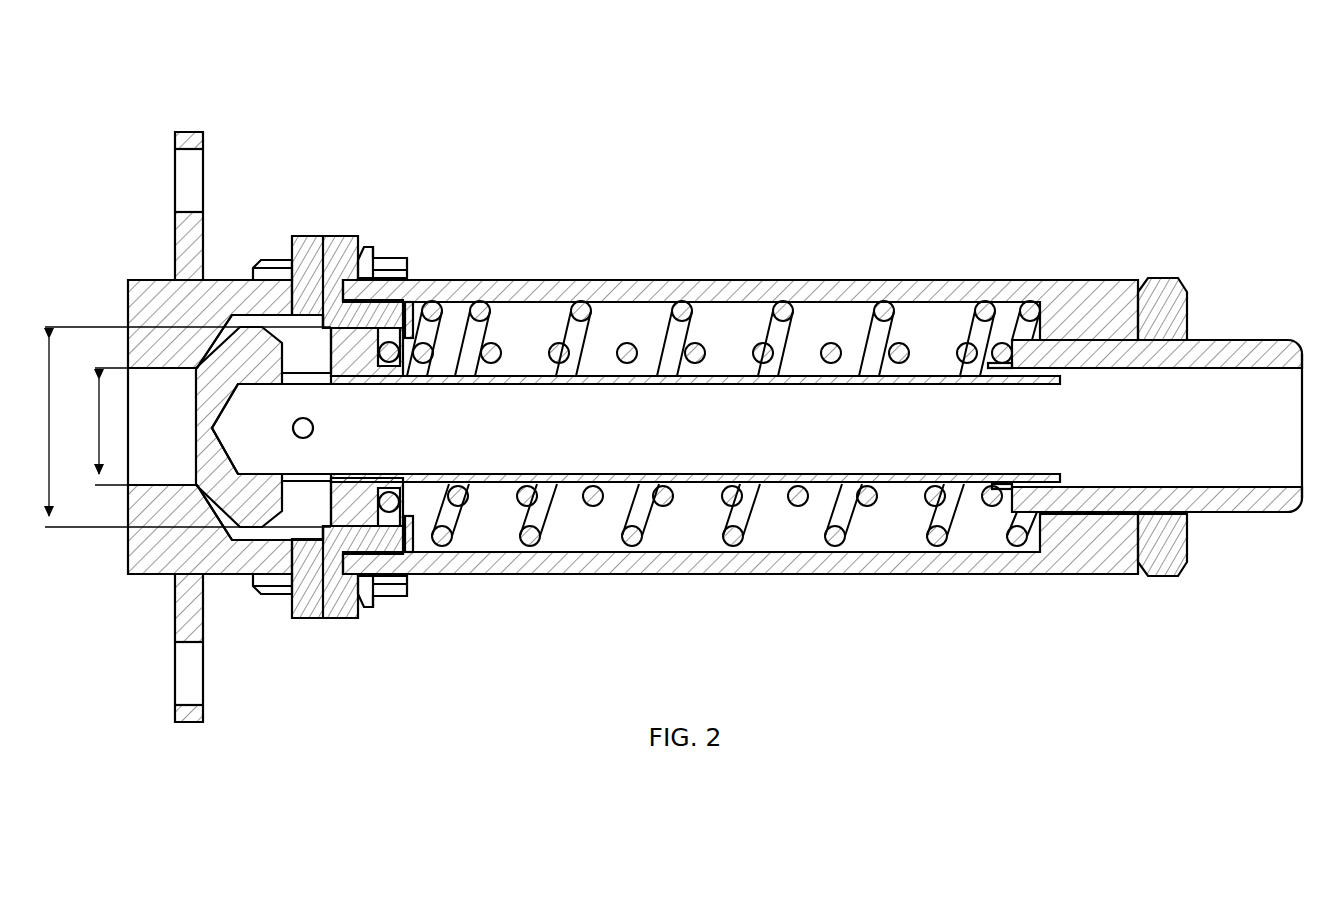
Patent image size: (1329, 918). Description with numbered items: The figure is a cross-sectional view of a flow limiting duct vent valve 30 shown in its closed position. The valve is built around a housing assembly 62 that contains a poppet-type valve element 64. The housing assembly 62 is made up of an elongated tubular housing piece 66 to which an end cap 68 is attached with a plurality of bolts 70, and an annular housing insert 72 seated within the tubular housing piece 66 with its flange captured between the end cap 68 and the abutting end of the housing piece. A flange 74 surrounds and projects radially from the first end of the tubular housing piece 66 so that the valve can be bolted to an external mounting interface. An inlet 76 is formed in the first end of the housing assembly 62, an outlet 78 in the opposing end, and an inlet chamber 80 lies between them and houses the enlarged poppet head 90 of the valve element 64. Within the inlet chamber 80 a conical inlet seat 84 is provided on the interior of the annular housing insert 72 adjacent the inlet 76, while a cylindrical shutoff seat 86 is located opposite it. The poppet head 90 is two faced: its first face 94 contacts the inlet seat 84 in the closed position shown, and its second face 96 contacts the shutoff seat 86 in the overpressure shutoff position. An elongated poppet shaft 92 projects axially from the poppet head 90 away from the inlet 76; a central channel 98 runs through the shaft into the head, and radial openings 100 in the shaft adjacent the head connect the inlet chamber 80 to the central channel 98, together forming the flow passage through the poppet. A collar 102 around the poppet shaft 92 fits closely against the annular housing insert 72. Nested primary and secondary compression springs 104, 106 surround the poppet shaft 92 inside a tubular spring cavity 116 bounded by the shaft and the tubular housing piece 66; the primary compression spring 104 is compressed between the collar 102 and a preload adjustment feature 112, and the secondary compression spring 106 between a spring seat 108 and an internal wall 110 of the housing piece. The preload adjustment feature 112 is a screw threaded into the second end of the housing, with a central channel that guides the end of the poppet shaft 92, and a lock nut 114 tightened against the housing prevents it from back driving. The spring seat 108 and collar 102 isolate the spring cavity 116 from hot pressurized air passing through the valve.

The flow limiting duct vent valve 30 is at (152, 130).
The housing assembly 62 is at (828, 446).
The valve element 64 is at (808, 366).
The elongated tubular housing piece 66 is at (905, 279).
The end cap 68 is at (140, 279).
The bolts 70 is at (390, 598).
The annular housing insert 72 is at (333, 292).
The flange 74 is at (204, 216).
The inlet 76 is at (176, 444).
The outlet 78 is at (1158, 442).
The inlet chamber 80 is at (288, 363).
The inlet seat 84 is at (206, 358).
The shutoff seat 86 is at (323, 521).
The poppet head 90 is at (233, 366).
The poppet shaft 92 is at (732, 370).
The first face 94 is at (208, 492).
The second face 96 is at (268, 514).
The central channel 98 is at (674, 442).
The radial openings 100 is at (296, 378).
The collar 102 is at (343, 352).
The primary compression spring 104 is at (501, 343).
The secondary compression spring 106 is at (481, 302).
The spring seat 108 is at (411, 303).
The internal wall 110 is at (1040, 326).
The preload adjustment feature 112 is at (1276, 340).
The lock nut 114 is at (1189, 311).
The spring cavity 116 is at (670, 544).